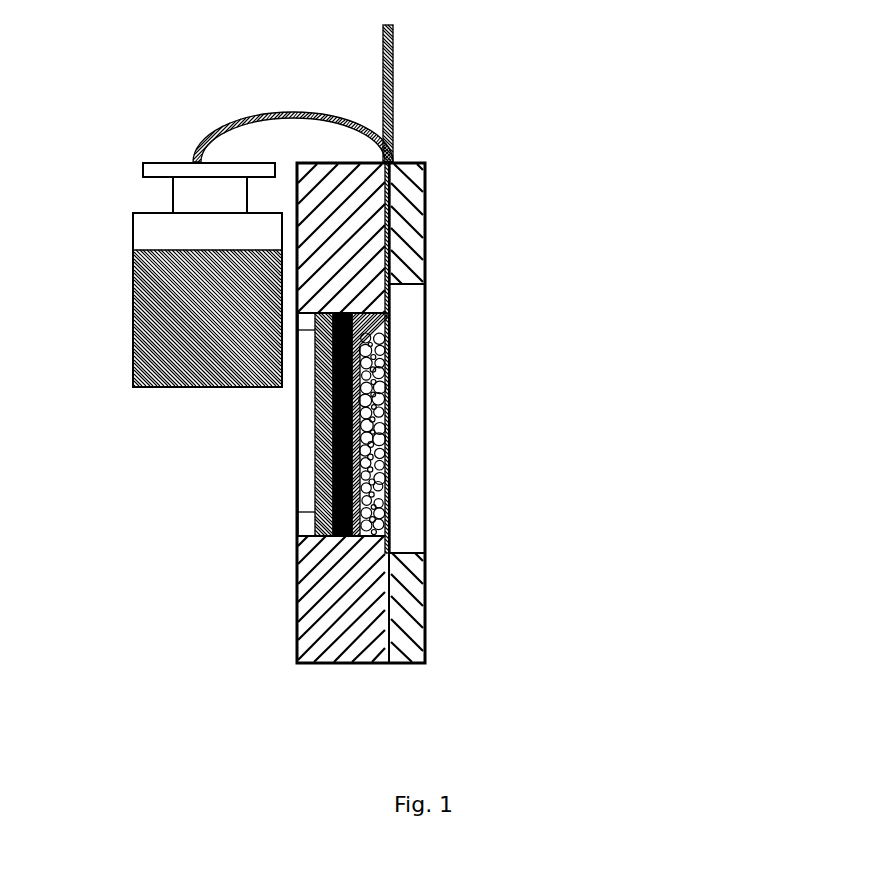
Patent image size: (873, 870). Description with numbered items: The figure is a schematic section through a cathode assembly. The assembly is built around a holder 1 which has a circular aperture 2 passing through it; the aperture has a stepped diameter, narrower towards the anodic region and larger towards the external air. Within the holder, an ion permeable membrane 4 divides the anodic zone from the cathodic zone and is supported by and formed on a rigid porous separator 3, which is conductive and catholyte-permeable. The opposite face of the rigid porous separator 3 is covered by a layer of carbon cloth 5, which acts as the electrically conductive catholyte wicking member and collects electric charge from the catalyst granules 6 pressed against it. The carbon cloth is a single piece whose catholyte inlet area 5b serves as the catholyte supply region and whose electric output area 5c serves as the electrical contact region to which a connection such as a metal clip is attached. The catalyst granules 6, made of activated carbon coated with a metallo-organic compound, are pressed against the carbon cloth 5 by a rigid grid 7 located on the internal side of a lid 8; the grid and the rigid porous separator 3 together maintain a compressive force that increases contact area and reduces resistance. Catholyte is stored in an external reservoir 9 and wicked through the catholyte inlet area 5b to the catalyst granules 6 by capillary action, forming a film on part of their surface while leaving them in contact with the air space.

The holder 1 is at (313, 588).
The circular aperture 2 is at (305, 395).
The rigid porous separator 3 is at (332, 420).
The ion permeable membrane 4 is at (323, 487).
The layer of carbon cloth 5 is at (377, 327).
The catholyte inlet area 5b is at (258, 112).
The electric output area 5c is at (394, 45).
The catalyst granules 6 is at (390, 440).
The rigid grid 7 is at (393, 508).
The lid 8 is at (420, 618).
The external reservoir 9 is at (215, 263).